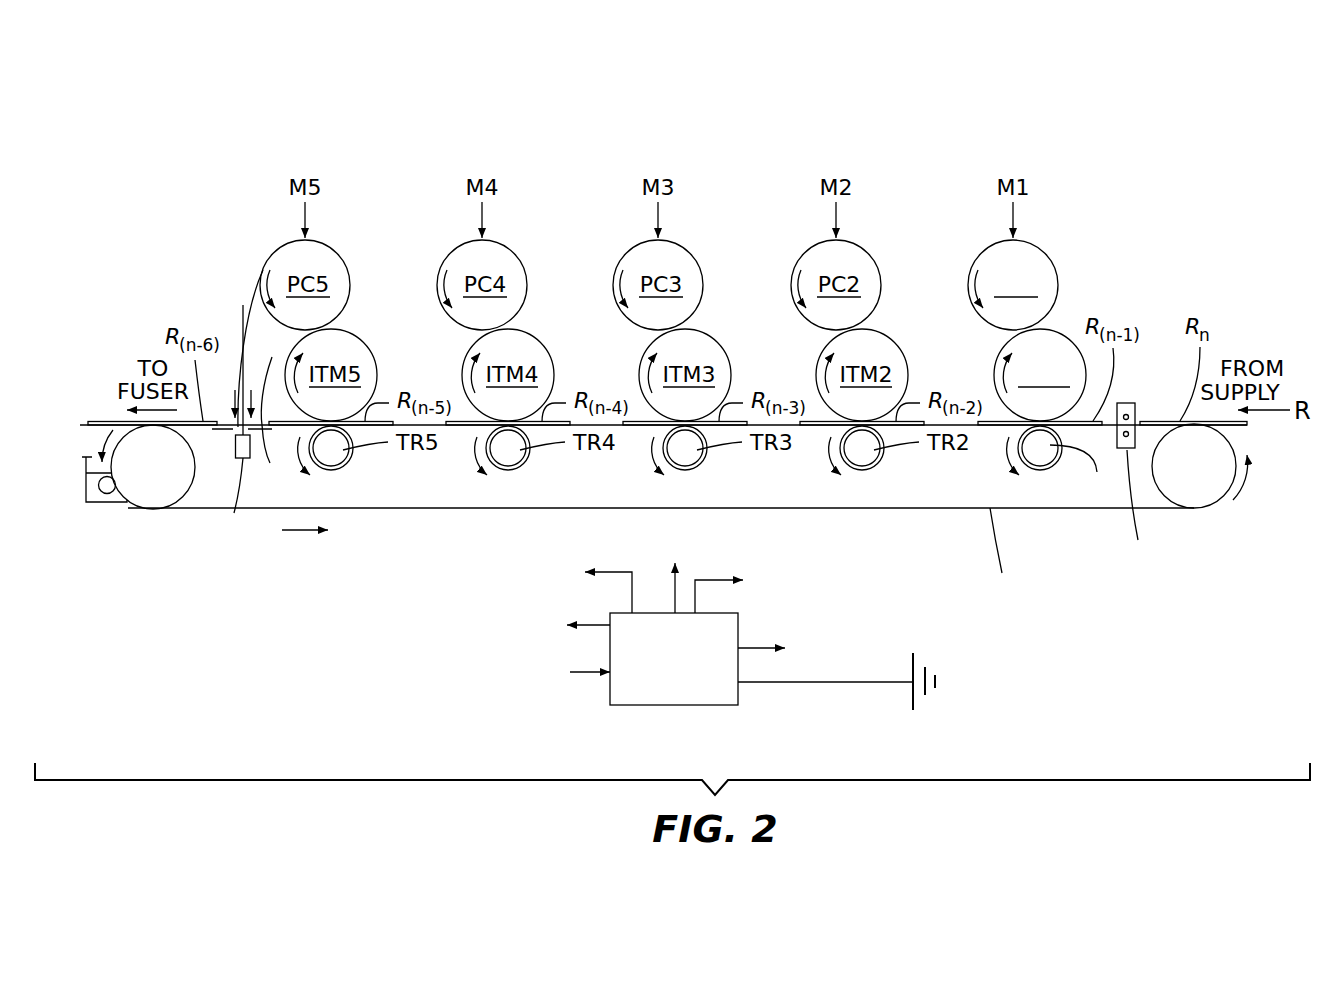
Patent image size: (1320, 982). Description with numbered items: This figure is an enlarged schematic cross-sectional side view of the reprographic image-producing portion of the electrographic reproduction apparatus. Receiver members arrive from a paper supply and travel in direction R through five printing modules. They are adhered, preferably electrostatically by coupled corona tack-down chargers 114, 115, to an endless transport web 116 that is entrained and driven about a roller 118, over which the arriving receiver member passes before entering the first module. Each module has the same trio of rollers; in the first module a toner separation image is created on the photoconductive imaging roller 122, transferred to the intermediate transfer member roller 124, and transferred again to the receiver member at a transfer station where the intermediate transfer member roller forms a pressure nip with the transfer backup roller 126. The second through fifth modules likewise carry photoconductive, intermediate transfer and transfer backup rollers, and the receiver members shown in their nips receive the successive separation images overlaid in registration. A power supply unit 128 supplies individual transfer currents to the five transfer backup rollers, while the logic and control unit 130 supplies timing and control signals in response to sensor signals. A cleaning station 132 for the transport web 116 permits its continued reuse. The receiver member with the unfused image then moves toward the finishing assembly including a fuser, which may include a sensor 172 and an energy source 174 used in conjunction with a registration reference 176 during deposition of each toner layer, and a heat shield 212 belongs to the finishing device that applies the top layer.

The corona tack-down charger 114 is at (1137, 408).
The corona tack-down charger 115 is at (1138, 512).
The endless transport web 116 is at (940, 508).
The roller 118 is at (1193, 503).
The photoconductive imaging roller 122 is at (1047, 252).
The intermediate transfer member roller 124 is at (1074, 338).
The transfer backup roller 126 is at (1040, 458).
The power supply unit 128 is at (665, 705).
The logic and control unit 130 is at (503, 672).
The cleaning station 132 is at (84, 468).
The sensor 172 is at (235, 504).
The energy source 174 is at (250, 305).
The registration reference 176 is at (271, 397).
The heat shield 212 is at (250, 401).